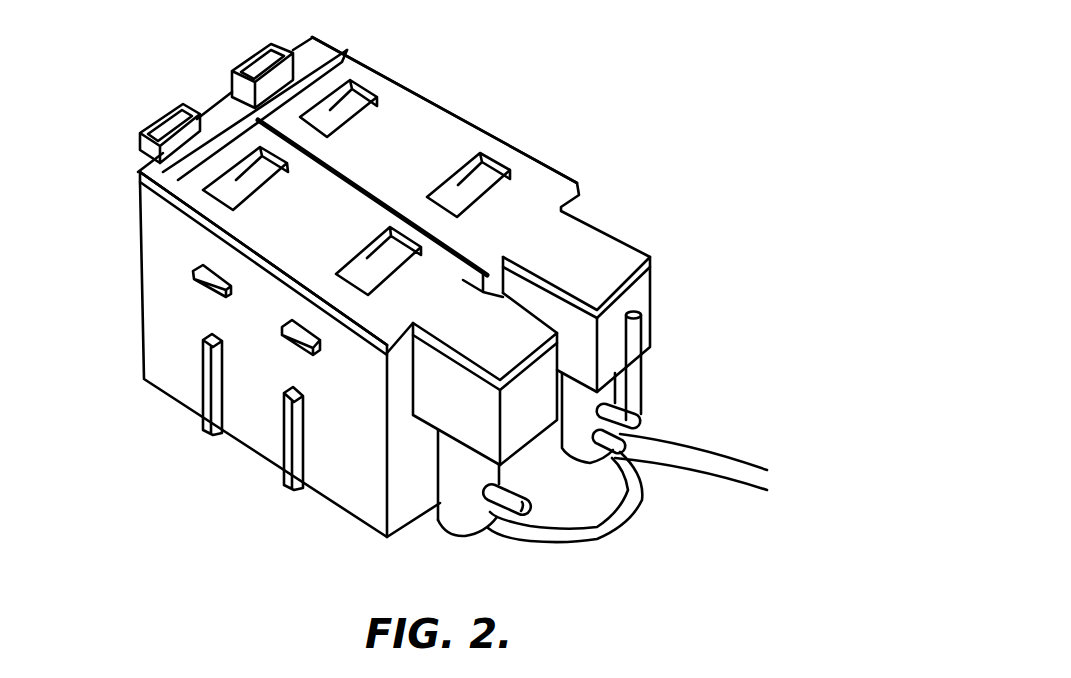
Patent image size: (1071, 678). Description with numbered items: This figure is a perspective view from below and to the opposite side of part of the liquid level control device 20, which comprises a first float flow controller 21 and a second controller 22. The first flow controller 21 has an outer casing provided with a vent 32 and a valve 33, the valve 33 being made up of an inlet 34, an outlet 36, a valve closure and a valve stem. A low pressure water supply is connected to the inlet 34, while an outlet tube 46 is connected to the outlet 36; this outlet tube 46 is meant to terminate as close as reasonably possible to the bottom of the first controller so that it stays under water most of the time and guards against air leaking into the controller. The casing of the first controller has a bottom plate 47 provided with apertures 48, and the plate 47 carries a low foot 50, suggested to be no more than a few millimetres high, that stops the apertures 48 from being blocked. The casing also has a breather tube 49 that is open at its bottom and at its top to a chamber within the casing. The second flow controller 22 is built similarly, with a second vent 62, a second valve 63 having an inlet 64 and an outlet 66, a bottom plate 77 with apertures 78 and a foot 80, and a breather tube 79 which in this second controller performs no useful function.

The liquid level control device 20 is at (229, 49).
The first float flow controller 21 is at (425, 97).
The second controller 22 is at (138, 222).
The vent 32 is at (608, 465).
The valve 33 is at (607, 391).
The inlet 34 is at (623, 457).
The outlet 36 is at (640, 427).
The outlet tube 46 is at (640, 351).
The bottom plate 47 is at (450, 143).
The apertures 48 is at (378, 96).
The breather tube 49 is at (270, 42).
The foot 50 is at (345, 49).
The second vent 62 is at (497, 520).
The second valve 63 is at (458, 483).
The inlet 64 is at (497, 533).
The outlet 66 is at (467, 528).
The bottom plate 77 is at (247, 230).
The apertures 78 is at (160, 173).
The breather tube 79 is at (155, 120).
The foot 80 is at (138, 177).